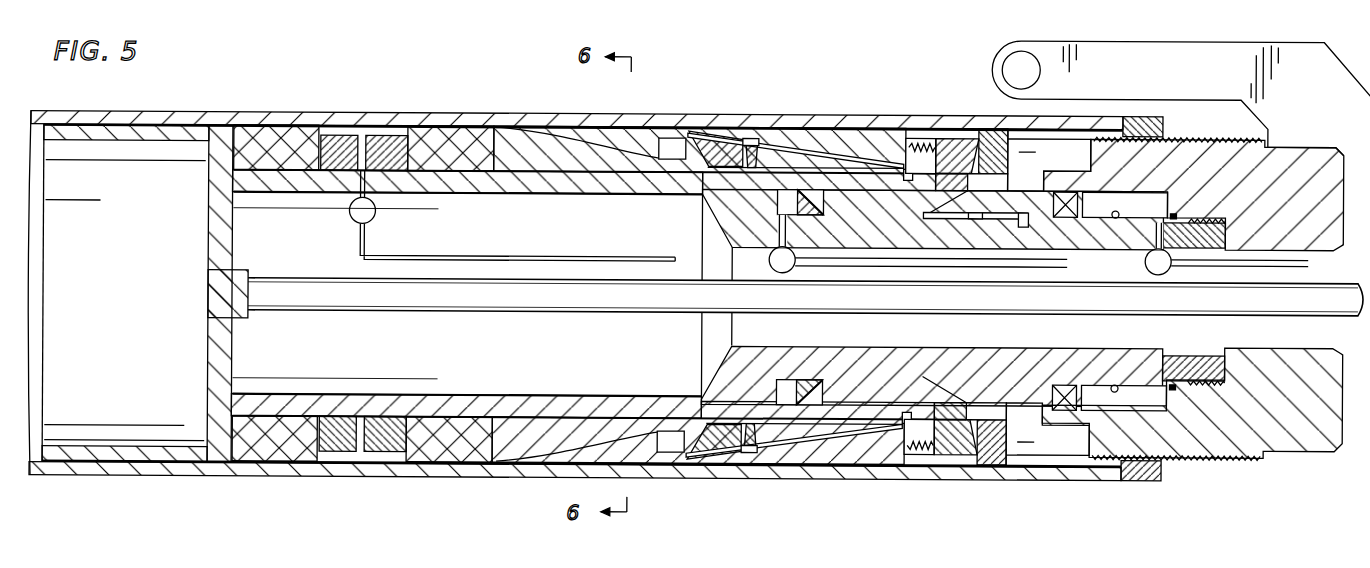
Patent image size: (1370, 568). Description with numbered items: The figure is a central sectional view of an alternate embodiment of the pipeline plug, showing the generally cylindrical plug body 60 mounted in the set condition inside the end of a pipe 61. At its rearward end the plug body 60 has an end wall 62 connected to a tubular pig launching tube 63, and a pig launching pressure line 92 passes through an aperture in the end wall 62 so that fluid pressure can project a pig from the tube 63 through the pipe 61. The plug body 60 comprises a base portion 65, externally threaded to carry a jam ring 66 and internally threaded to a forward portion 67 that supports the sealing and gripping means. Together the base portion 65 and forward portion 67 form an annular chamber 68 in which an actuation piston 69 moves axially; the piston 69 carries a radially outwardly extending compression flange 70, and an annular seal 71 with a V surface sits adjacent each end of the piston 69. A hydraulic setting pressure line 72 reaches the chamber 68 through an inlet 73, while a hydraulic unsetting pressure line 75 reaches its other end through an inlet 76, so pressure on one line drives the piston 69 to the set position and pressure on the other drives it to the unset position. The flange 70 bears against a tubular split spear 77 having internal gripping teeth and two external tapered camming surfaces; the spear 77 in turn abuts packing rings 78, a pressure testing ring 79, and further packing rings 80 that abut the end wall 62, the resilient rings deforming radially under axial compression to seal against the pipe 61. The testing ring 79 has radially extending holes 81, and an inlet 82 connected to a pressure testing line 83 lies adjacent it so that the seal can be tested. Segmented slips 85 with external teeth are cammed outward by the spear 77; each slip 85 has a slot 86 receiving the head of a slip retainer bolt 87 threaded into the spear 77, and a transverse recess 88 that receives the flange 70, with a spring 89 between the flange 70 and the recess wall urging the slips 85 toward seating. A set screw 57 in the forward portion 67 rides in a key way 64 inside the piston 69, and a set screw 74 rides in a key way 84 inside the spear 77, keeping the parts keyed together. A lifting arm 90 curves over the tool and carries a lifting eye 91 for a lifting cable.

The set screw 57 is at (1021, 226).
The plug body 60 is at (1283, 456).
The pipe 61 is at (913, 480).
The end wall 62 is at (210, 215).
The pig launching tube 63 is at (108, 449).
The key way 64 is at (945, 218).
The base portion 65 is at (1327, 416).
The jam ring 66 is at (1162, 482).
The forward portion 67 is at (498, 400).
The annular chamber 68 is at (1114, 217).
The actuation piston 69 is at (978, 218).
The compression flange 70 is at (957, 150).
The annular seal 71 is at (809, 215).
The hydraulic setting pressure line 72 is at (1219, 264).
The inlet 73 is at (1150, 247).
The set screw 74 is at (832, 167).
The hydraulic unsetting pressure line 75 is at (897, 267).
The inlet 76 is at (777, 244).
The split spear 77 is at (828, 168).
The packing rings 78 is at (450, 135).
The pressure testing ring 79 is at (339, 140).
The packing rings 80 is at (276, 134).
The radially extending holes 81 is at (368, 140).
The inlet 82 is at (354, 198).
The pressure testing line 83 is at (449, 258).
The key way 84 is at (702, 135).
The segmented slips 85 is at (568, 135).
The slot 86 is at (770, 132).
The slip retainer bolt 87 is at (752, 138).
The recess 88 is at (903, 130).
The spring 89 is at (920, 140).
The lifting arm 90 is at (1287, 99).
The lifting eye 91 is at (1025, 54).
The pig launching pressure line 92 is at (410, 313).